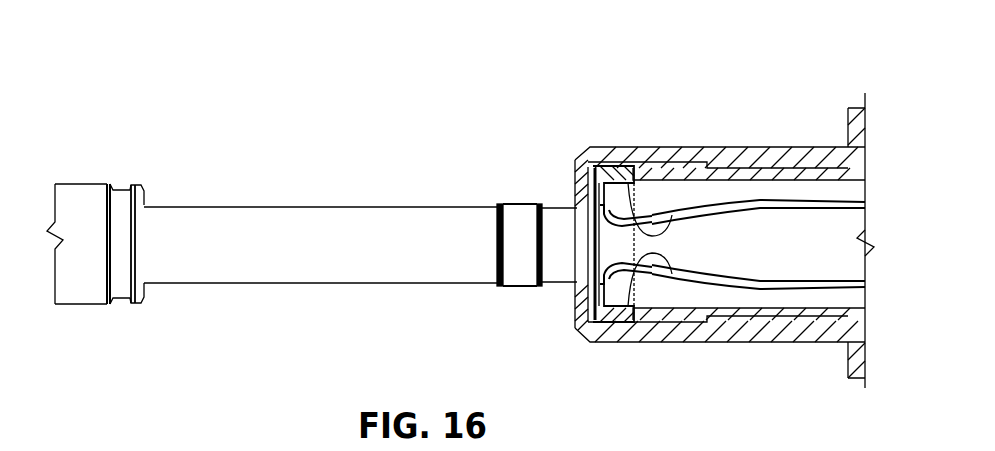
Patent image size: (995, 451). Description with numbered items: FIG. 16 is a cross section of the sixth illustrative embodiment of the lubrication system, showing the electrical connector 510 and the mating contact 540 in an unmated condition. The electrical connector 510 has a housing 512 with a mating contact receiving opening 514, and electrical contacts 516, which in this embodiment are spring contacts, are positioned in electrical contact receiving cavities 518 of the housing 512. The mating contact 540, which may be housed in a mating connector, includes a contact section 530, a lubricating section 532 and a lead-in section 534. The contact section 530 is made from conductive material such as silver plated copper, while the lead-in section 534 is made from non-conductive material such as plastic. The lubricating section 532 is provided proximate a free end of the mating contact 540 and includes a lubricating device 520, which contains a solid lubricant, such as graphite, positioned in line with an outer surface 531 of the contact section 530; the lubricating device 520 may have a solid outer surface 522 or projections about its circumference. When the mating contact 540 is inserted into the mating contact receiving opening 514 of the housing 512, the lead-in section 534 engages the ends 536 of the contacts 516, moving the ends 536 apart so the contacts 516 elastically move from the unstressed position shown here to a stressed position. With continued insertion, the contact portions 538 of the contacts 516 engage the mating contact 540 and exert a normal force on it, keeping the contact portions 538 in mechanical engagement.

The electrical connector 510 is at (714, 68).
The housing 512 is at (740, 147).
The mating contact receiving opening 514 is at (587, 283).
The electrical contact 516 is at (843, 205).
The electrical contact receiving cavity 518 is at (703, 292).
The lubricating device 520 is at (514, 272).
The outer surface 522 is at (493, 205).
The contact section 530 is at (225, 272).
The outer surface 531 is at (318, 245).
The lubricating section 532 is at (518, 205).
The lead-in section 534 is at (563, 207).
The end 536 is at (630, 214).
The contact portion 538 is at (655, 233).
The mating contact 540 is at (232, 170).